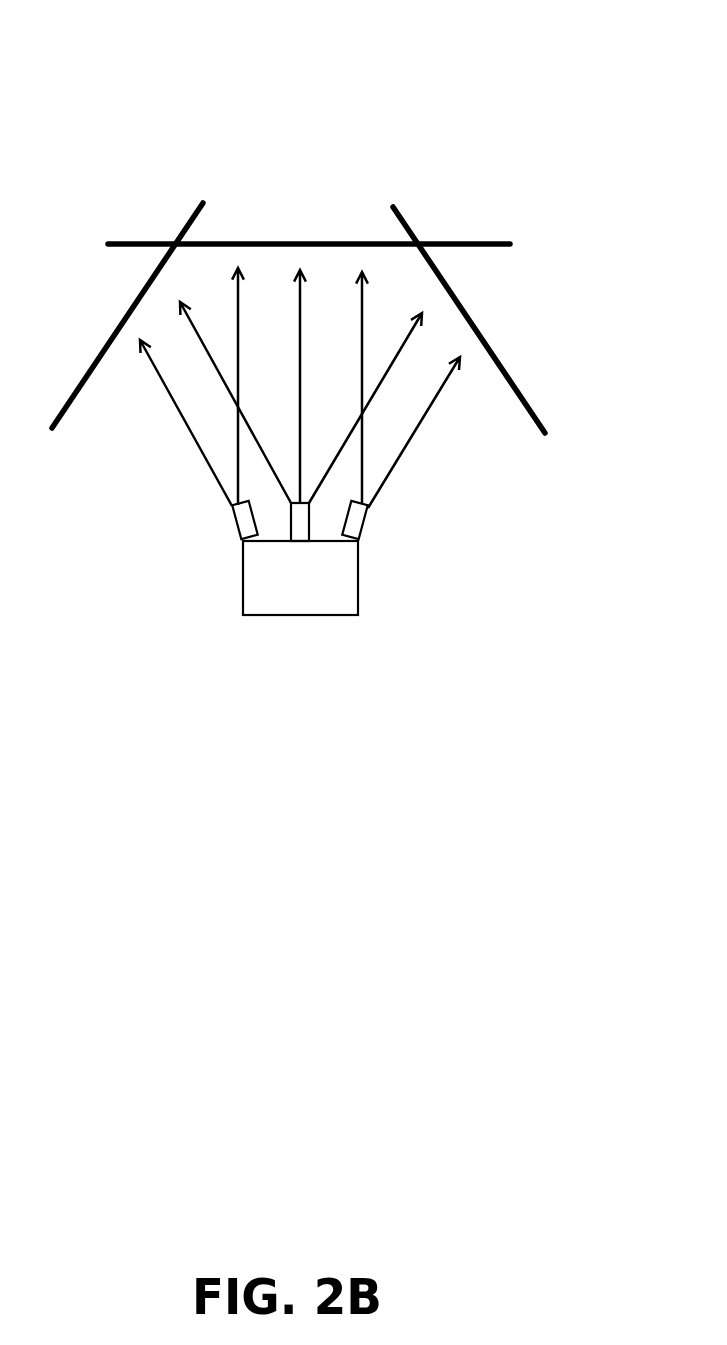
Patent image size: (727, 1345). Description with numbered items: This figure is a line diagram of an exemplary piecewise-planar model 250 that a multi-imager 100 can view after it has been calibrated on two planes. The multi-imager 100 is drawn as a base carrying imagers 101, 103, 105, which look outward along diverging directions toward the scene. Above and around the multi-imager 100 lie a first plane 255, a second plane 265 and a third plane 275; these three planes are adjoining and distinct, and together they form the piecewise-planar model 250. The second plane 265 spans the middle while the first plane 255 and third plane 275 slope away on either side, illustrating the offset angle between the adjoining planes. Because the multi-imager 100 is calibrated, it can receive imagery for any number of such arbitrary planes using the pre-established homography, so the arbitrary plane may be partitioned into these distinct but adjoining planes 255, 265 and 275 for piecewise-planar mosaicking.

The piecewise-planar model 250 is at (53, 58).
The second plane 265 is at (301, 243).
The third plane 275 is at (126, 315).
The first plane 255 is at (470, 315).
The multi-imager 100 is at (357, 585).
The imager 103 is at (300, 654).
The imager 105 is at (230, 518).
The imager 101 is at (370, 522).